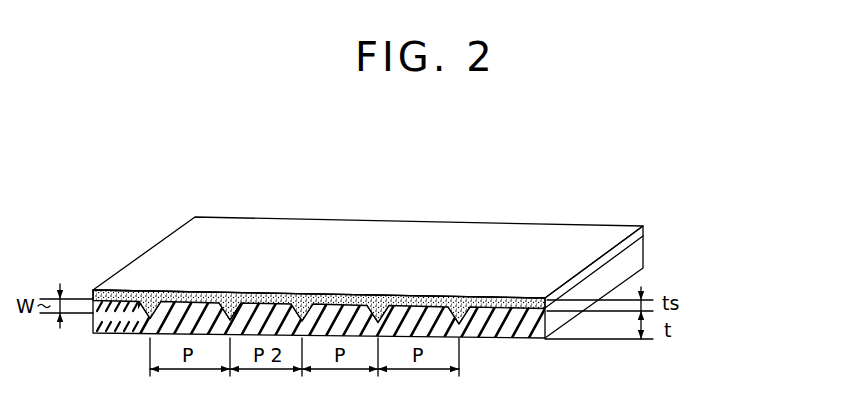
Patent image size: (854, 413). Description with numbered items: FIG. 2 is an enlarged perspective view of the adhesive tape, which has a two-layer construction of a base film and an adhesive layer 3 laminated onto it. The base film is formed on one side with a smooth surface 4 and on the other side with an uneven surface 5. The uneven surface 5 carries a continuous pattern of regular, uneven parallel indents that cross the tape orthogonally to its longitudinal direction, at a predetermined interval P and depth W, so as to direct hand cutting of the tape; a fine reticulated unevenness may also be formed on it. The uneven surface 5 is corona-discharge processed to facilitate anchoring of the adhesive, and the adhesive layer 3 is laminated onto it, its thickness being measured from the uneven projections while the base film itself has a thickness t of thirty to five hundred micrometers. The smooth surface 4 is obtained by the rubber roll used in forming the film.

The adhesive layer 3 is at (503, 300).
The smooth surface 4 is at (327, 345).
The uneven surface 5 is at (229, 300).